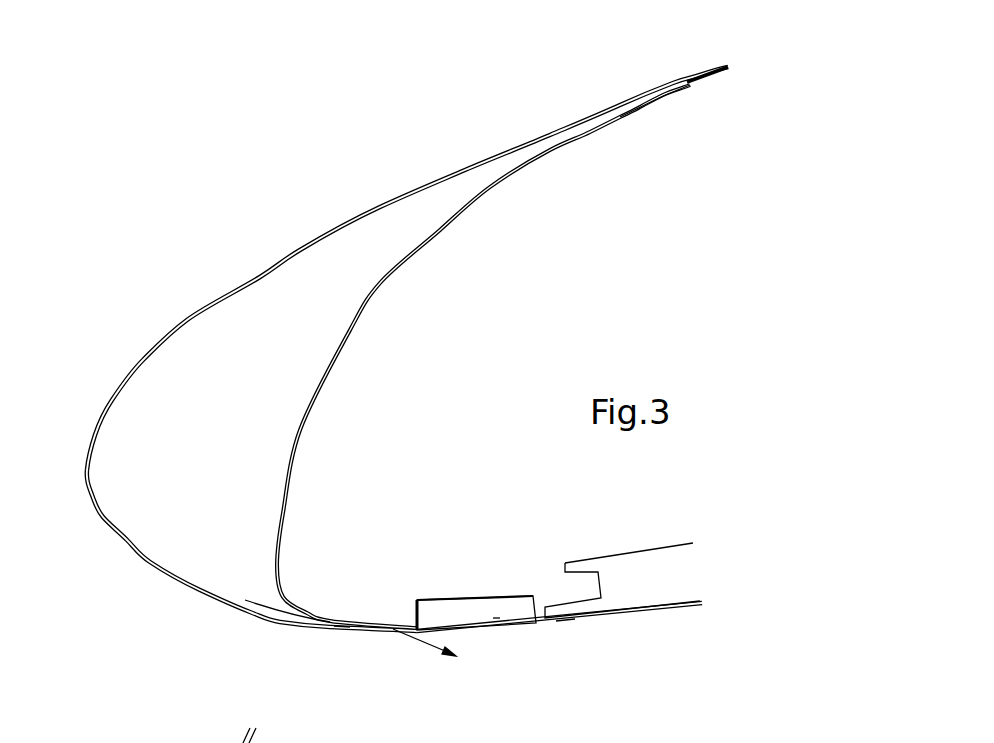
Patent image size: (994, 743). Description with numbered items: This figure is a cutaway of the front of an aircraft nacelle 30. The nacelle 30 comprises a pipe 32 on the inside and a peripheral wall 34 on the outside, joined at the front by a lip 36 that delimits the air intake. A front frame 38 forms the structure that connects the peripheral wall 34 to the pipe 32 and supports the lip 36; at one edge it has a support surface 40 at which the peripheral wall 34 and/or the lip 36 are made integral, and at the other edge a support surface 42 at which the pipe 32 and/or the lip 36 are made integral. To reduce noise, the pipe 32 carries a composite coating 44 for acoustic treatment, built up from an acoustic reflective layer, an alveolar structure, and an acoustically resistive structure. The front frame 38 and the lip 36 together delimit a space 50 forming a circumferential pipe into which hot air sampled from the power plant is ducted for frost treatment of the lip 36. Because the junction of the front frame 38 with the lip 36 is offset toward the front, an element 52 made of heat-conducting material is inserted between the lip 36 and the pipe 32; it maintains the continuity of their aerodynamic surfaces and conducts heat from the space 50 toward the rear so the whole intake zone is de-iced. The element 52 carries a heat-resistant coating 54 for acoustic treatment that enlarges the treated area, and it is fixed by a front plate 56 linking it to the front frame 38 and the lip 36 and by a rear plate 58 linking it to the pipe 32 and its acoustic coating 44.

The nacelle 30 is at (303, 187).
The pipe 32 is at (575, 639).
The peripheral wall 34 is at (722, 64).
The lip 36 is at (188, 317).
The front frame 38 is at (350, 330).
The support surface 40 is at (663, 100).
The support surface 42 is at (322, 622).
The coating for acoustic treatment 44 is at (673, 595).
The space 50 is at (182, 515).
The element 52 is at (417, 600).
The coating for acoustic treatment 54 is at (497, 618).
The plate 56 is at (341, 607).
The plate 58 is at (565, 595).